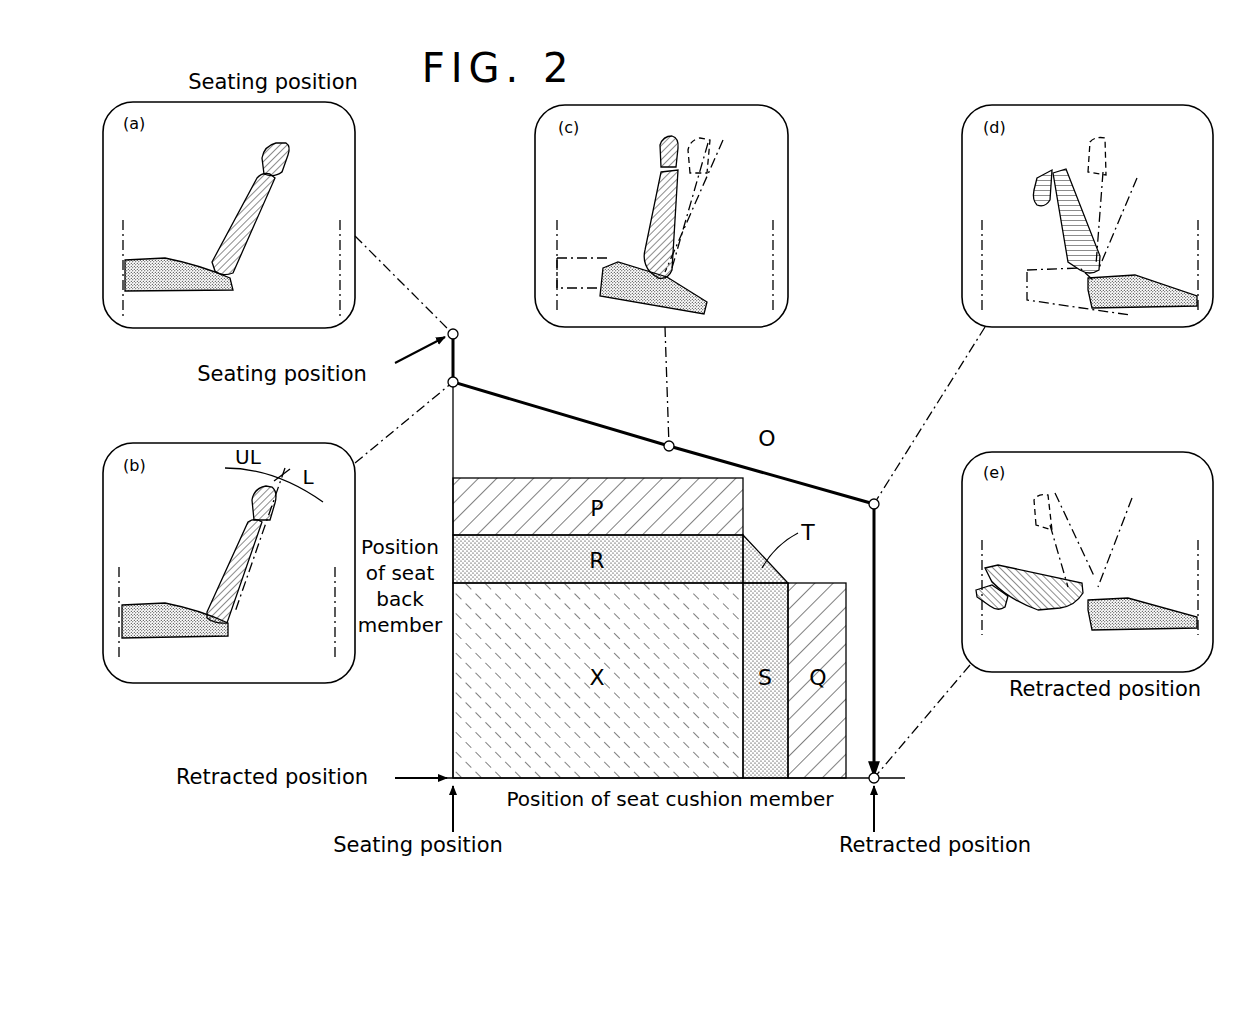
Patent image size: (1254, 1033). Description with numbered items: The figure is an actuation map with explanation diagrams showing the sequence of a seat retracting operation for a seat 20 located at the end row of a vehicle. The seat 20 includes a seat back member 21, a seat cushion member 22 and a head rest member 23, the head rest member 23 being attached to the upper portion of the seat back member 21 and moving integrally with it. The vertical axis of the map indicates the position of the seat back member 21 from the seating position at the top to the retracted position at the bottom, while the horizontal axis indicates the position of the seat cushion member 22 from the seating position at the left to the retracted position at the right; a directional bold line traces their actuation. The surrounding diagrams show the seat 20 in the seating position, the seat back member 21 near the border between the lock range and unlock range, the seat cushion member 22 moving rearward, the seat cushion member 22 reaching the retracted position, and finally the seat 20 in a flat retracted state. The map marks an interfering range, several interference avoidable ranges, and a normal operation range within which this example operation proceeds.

The seat 20 is at (172, 210).
The seat back member 21 is at (653, 396).
The seat cushion member 22 is at (659, 455).
The head rest member 23 is at (622, 389).